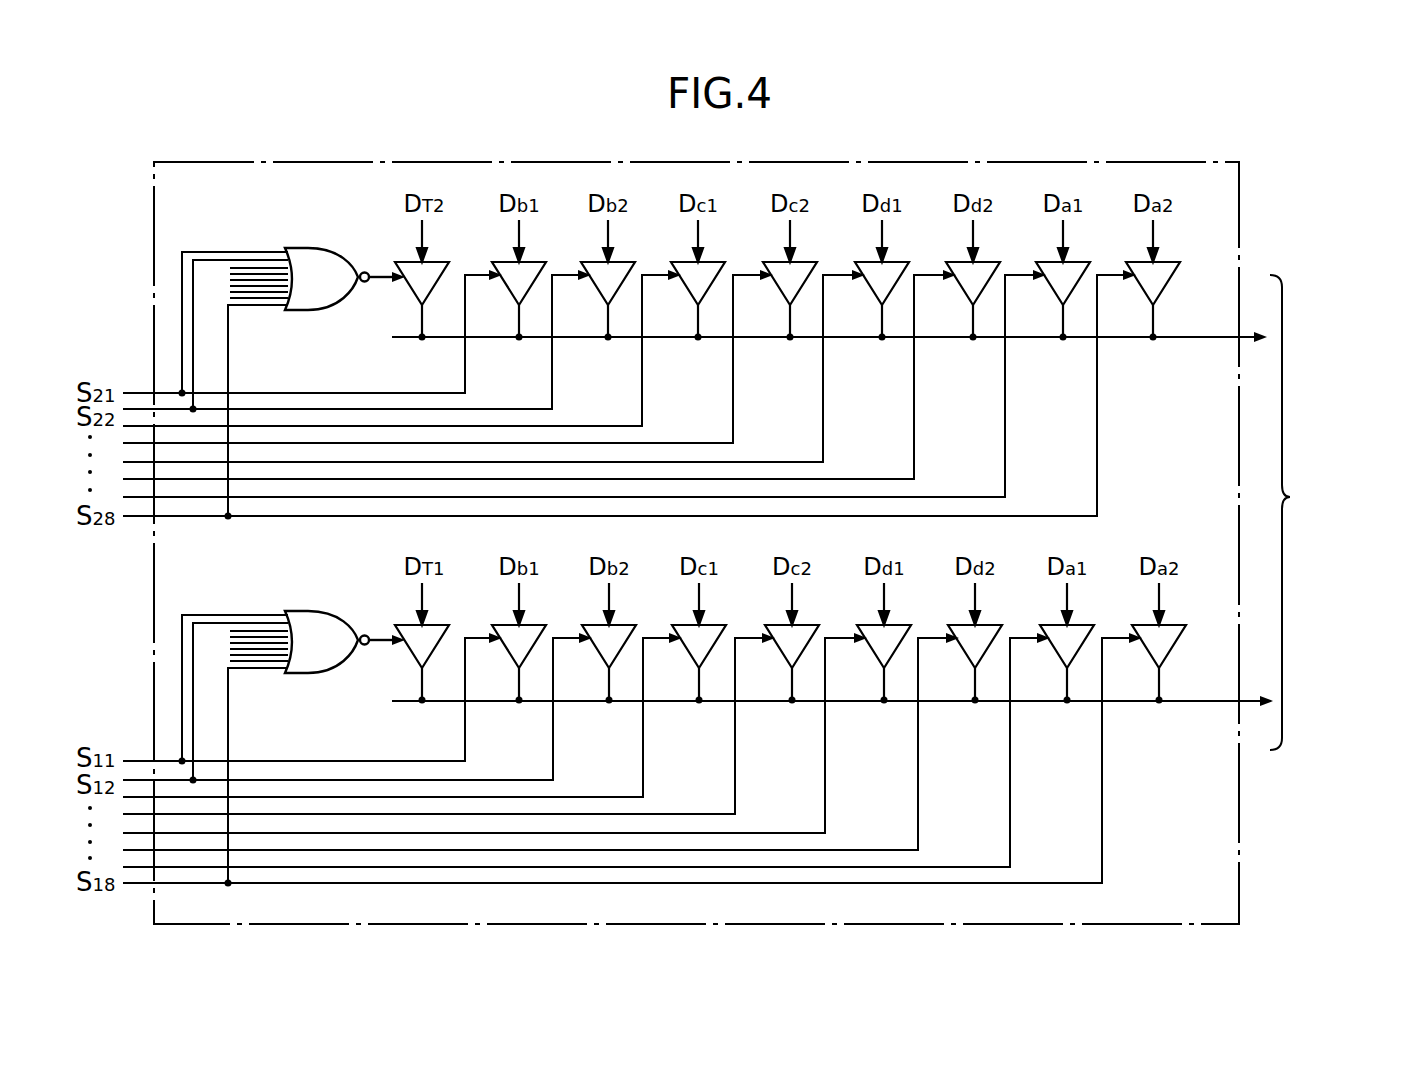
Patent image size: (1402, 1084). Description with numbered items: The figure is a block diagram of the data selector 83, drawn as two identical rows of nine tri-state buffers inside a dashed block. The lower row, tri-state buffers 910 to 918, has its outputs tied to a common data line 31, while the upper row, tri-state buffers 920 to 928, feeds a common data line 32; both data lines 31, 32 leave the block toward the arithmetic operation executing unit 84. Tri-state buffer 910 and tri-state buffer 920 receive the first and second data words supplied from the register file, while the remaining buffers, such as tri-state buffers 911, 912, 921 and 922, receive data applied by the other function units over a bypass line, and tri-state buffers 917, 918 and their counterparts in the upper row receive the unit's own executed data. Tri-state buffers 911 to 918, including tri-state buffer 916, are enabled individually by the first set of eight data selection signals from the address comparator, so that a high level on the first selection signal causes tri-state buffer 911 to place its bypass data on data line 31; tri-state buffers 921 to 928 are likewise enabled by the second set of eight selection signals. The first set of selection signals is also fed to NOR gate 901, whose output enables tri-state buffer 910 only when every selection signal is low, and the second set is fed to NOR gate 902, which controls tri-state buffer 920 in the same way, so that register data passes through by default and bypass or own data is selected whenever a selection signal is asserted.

The data selector 83 is at (1239, 215).
The arithmetic operation executing unit 84 is at (1331, 512).
The NOR gate 901 is at (304, 611).
The NOR gate 902 is at (311, 248).
The tri-state buffer 910 is at (398, 646).
The tri-state buffer 911 is at (507, 648).
The tri-state buffer 912 is at (597, 648).
The tri-state buffer 916 is at (963, 648).
The tri-state buffer 917 is at (1055, 648).
The tri-state buffer 918 is at (1147, 648).
The tri-state buffer 920 is at (398, 283).
The tri-state buffer 921 is at (507, 285).
The tri-state buffer 922 is at (596, 285).
The tri-state buffer 928 is at (1141, 285).
The data line 31 is at (1213, 704).
The data line 32 is at (1218, 340).